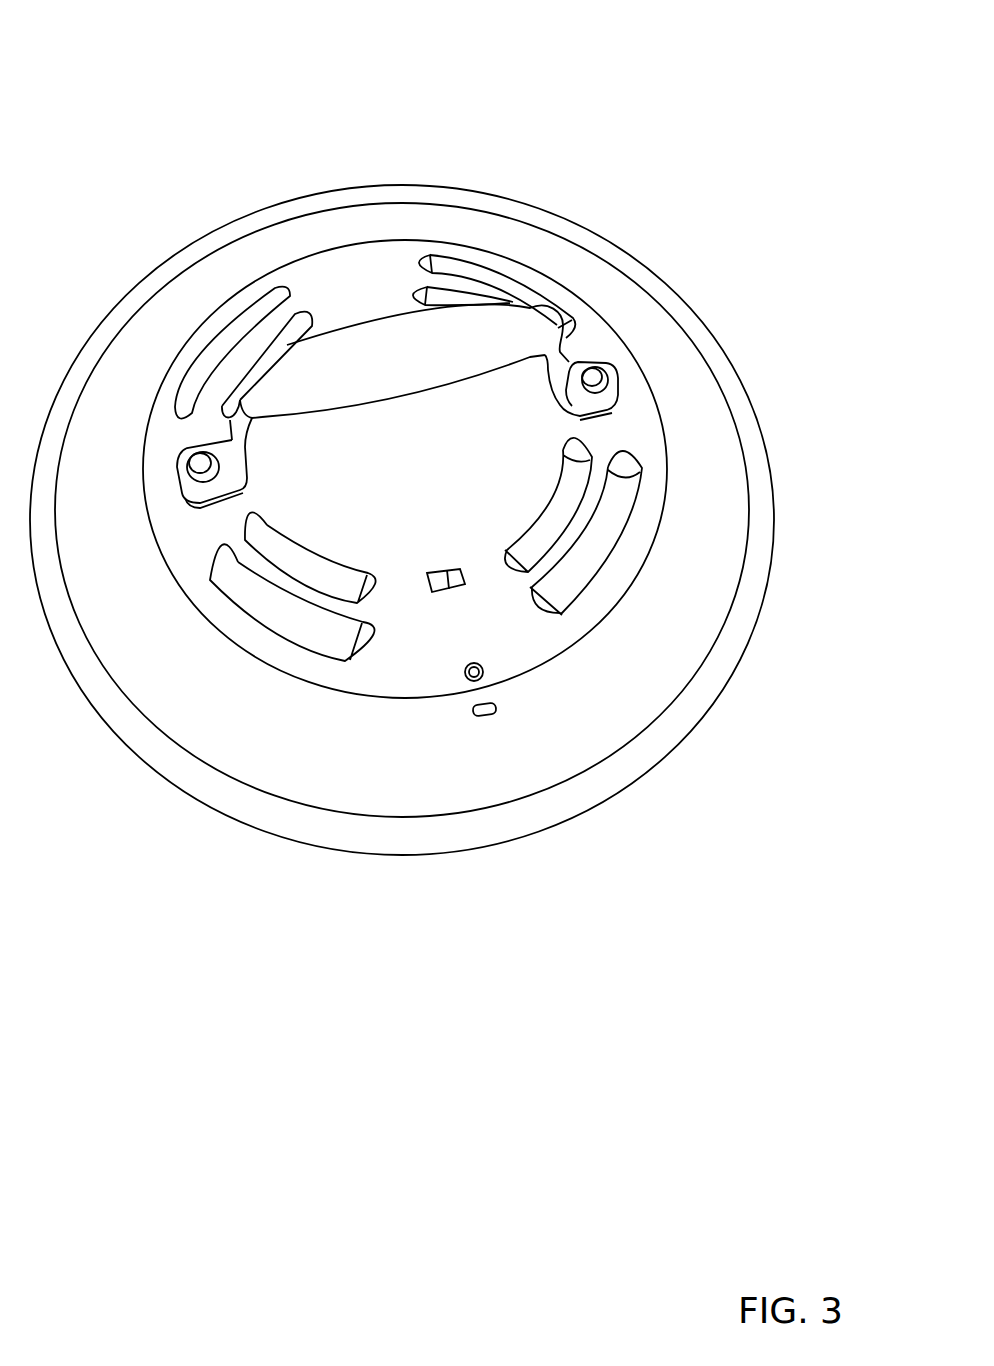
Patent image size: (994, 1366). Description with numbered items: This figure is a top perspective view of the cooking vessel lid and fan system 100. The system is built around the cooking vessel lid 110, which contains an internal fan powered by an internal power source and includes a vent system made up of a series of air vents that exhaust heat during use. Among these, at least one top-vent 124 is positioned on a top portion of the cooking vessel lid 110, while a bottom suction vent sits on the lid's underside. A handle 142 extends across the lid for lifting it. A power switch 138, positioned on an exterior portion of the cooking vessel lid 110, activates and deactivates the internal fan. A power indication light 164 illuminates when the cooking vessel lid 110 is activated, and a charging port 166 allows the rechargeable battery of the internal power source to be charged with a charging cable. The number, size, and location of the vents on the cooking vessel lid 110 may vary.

The cooking vessel lid and fan system 100 is at (630, 90).
The cooking vessel lid 110 is at (660, 343).
The top-vent 124 is at (582, 567).
The power switch 138 is at (458, 572).
The handle 142 is at (473, 340).
The power indication light 164 is at (483, 678).
The charging port 166 is at (486, 715).